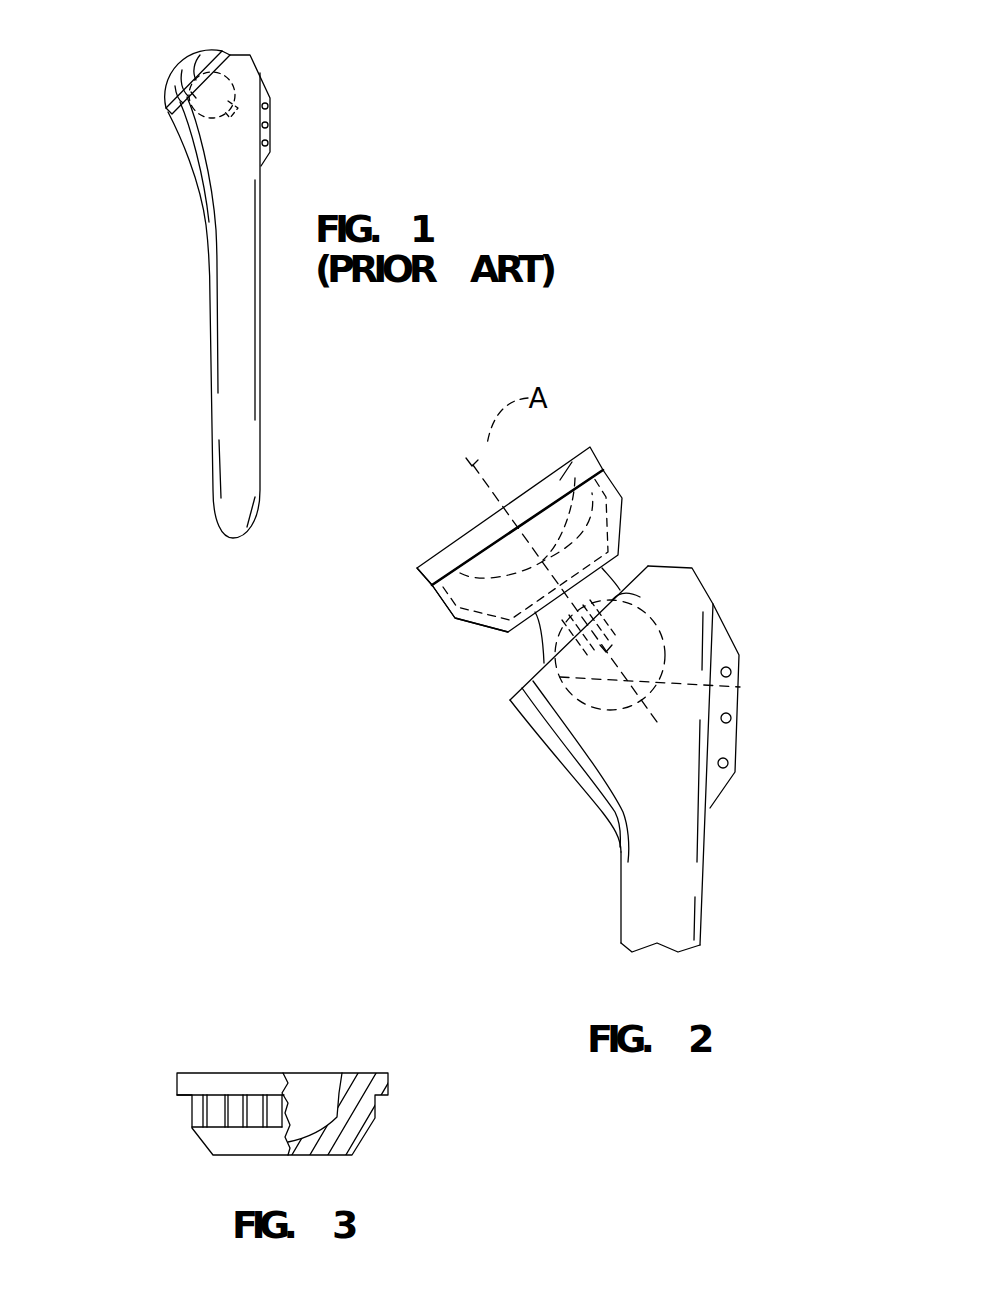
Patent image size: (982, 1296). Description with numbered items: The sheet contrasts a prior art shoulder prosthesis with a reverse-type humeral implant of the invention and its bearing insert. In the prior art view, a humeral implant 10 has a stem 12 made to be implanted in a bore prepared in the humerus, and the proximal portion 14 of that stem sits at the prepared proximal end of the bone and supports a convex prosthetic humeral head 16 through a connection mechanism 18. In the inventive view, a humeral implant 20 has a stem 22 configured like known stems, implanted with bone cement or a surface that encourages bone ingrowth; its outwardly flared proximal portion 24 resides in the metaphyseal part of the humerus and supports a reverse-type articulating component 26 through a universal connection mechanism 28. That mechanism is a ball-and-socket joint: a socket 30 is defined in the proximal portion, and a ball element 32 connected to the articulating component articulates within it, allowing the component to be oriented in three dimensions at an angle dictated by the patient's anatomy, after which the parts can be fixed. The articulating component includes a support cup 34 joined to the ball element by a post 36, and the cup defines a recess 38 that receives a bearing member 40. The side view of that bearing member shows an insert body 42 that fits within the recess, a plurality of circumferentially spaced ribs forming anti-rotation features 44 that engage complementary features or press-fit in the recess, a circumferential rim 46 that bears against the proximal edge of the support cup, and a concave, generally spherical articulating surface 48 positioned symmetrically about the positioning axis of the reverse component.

In FIG. 1, the humeral implant 10 is at (206, 277).
In FIG. 1, the stem 12 is at (233, 433).
In FIG. 1, the proximal portion 14 is at (245, 68).
In FIG. 1, the prosthetic humeral head 16 is at (177, 70).
In FIG. 1, the connection mechanism 18 is at (181, 99).
In FIG. 2, the humeral implant 20 is at (714, 600).
In FIG. 2, the stem 22 is at (685, 883).
In FIG. 2, the proximal portion 24 is at (620, 752).
In FIG. 2, the articulating component 26 is at (459, 617).
In FIG. 2, the universal connection mechanism 28 is at (542, 658).
In FIG. 2, the socket 30 is at (745, 688).
In FIG. 2, the ball element 32 is at (598, 598).
In FIG. 2, the support cup 34 is at (603, 473).
In FIG. 2, the post 36 is at (540, 630).
In FIG. 2, the recess 38 is at (618, 515).
In FIG. 2, the bearing member 40 is at (430, 572).
In FIG. 3, the bearing member 40 is at (175, 1082).
In FIG. 3, the insert body 42 is at (377, 1110).
In FIG. 3, the anti-rotation features 44 is at (225, 1128).
In FIG. 3, the circumferential rim 46 is at (212, 1082).
In FIG. 3, the articulating surface 48 is at (342, 1073).